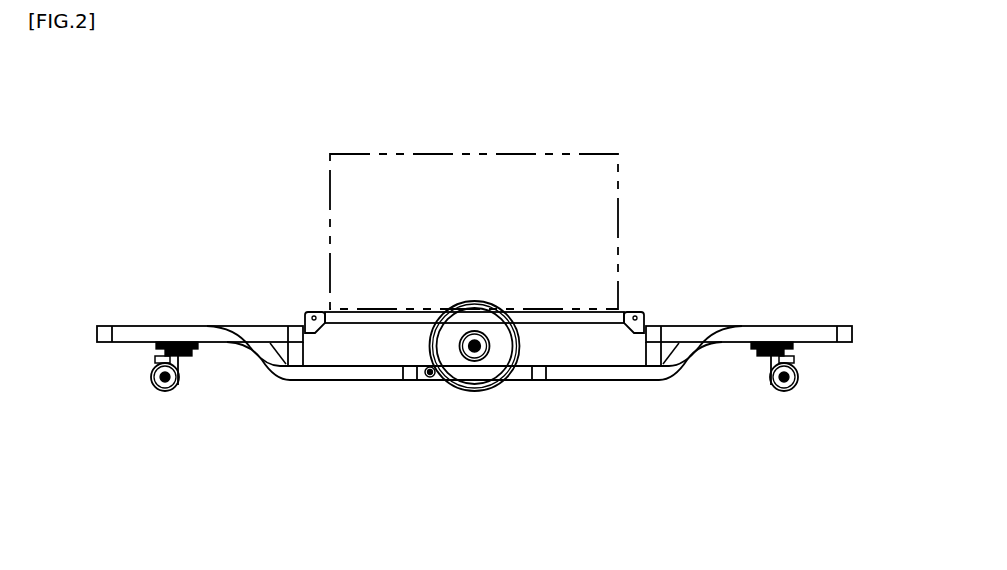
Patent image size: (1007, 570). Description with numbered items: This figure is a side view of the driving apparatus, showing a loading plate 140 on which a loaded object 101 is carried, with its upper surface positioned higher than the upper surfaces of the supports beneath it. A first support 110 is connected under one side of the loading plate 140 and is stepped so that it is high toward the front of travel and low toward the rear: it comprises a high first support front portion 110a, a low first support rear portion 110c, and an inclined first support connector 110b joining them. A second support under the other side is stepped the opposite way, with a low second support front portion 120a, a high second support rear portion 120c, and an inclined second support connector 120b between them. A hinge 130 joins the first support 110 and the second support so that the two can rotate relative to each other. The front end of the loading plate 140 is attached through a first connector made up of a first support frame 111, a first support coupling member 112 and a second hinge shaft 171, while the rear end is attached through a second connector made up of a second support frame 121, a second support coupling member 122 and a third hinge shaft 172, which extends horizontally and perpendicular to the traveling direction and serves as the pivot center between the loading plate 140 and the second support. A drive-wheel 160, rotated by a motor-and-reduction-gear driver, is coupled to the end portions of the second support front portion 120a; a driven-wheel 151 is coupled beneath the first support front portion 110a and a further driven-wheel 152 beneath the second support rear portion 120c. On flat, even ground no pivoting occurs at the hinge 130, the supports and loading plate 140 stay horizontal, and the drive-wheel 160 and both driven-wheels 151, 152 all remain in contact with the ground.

The loaded object 101 is at (533, 165).
The first support 110 is at (434, 399).
The first support front portion 110a is at (200, 376).
The first support connector 110b is at (244, 357).
The first support rear portion 110c is at (315, 372).
The first support frame 111 is at (268, 327).
The first support coupling member 112 is at (284, 328).
The second support front portion 120a is at (608, 368).
The second support connector 120b is at (707, 353).
The second support rear portion 120c is at (748, 376).
The second support frame 121 is at (684, 325).
The second support coupling member 122 is at (645, 322).
The hinge 130 is at (430, 380).
The loading plate 140 is at (372, 318).
The driven-wheel 151 is at (158, 381).
The driven-wheel 152 is at (788, 387).
The drive-wheel 160 is at (479, 363).
The second hinge shaft 171 is at (312, 318).
The third hinge shaft 172 is at (634, 318).